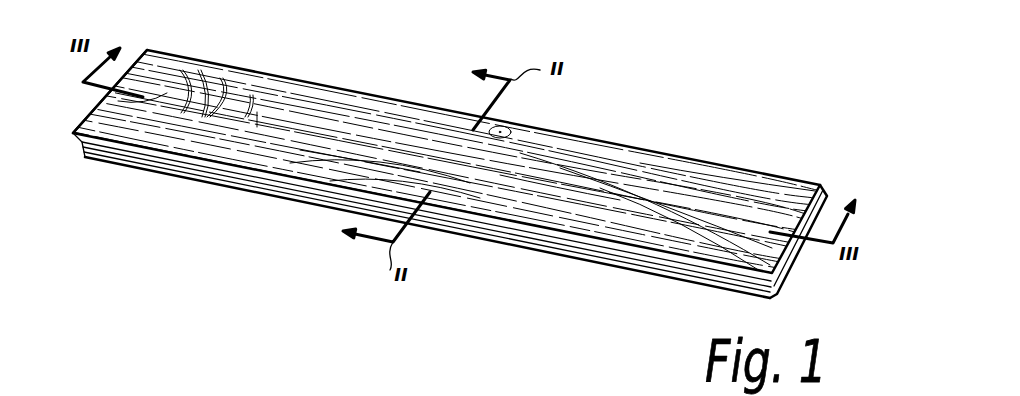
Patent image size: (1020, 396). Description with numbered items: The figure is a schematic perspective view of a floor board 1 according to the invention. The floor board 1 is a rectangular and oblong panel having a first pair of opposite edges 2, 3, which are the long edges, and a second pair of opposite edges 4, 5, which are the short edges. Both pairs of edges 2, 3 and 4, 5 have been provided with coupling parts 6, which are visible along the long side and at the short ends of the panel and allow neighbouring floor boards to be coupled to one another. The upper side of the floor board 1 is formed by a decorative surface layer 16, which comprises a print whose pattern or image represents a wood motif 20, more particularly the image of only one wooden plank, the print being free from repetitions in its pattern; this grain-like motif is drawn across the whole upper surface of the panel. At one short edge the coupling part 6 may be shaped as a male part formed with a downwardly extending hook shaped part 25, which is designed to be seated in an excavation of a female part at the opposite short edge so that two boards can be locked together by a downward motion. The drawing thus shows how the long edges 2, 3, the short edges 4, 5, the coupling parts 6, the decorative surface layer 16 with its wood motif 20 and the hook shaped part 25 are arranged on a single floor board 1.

The floor board 1 is at (705, 137).
The long edge 2 is at (623, 136).
The long edge 3 is at (641, 282).
The short edge 4 is at (136, 44).
The short edge 5 is at (823, 172).
The coupling parts 6 is at (797, 267).
The decorative surface layer 16 is at (283, 107).
The wood motif 20 is at (362, 162).
The hook shaped part 25 is at (553, 187).